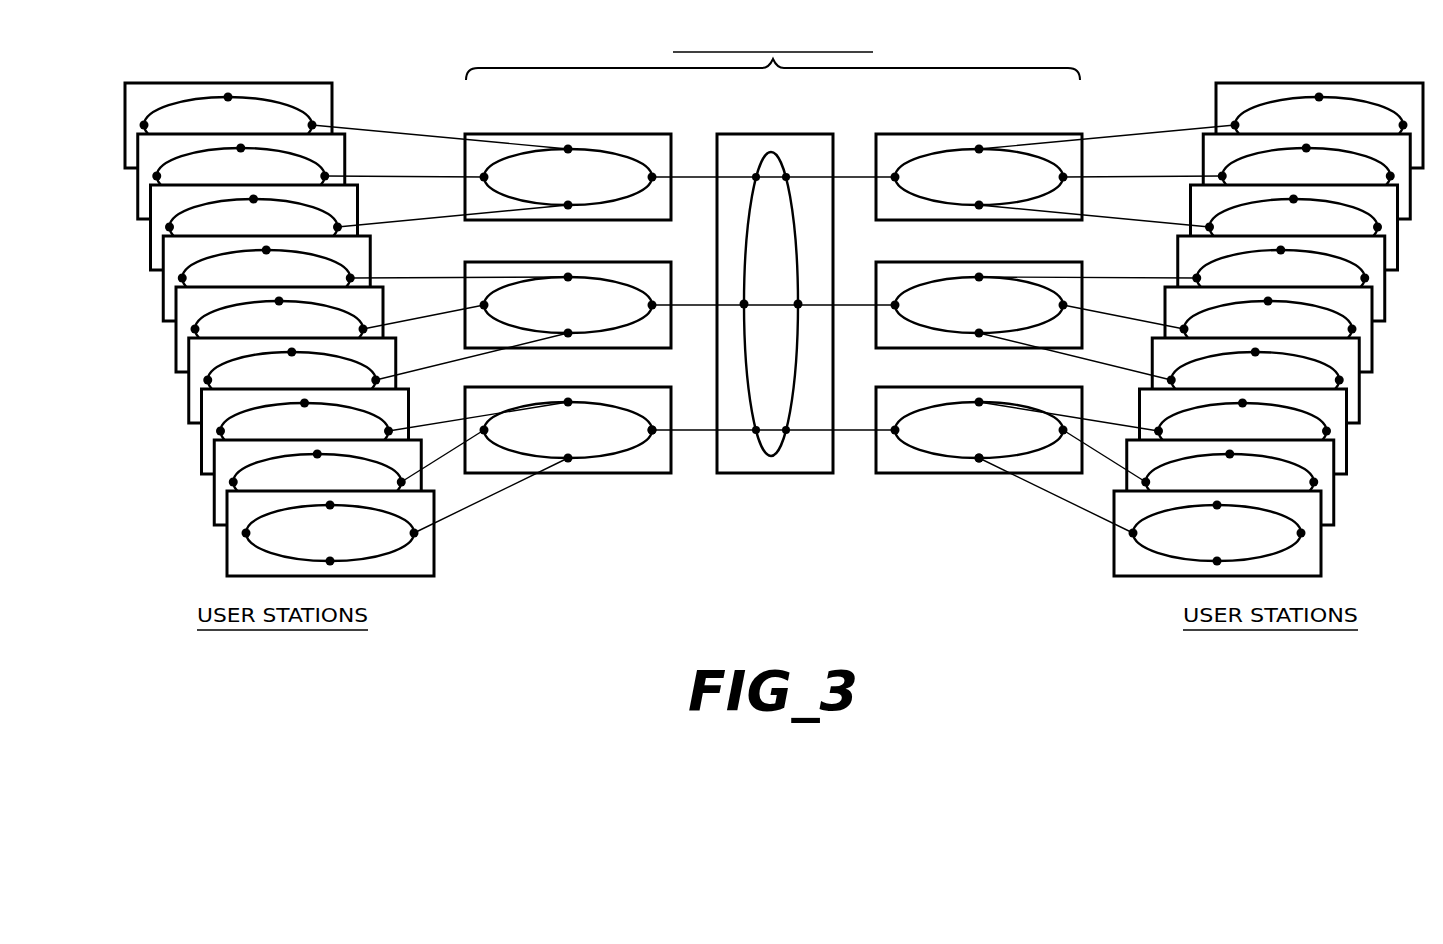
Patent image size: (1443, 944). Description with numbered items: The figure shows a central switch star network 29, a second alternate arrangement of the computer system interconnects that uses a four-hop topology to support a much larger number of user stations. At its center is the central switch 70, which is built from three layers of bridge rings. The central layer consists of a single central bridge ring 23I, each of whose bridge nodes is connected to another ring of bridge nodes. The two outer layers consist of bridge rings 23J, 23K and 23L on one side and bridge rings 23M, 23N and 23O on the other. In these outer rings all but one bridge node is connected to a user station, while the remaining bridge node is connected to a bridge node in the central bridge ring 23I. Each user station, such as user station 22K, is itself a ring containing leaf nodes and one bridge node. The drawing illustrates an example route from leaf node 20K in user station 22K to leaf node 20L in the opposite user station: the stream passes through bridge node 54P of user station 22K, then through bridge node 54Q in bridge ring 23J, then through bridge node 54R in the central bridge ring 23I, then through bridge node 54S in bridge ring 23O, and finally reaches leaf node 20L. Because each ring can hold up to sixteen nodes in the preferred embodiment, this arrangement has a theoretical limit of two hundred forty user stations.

The central switch 70 is at (918, 68).
The central switch star network 29 is at (785, 628).
The bridge ring 23L is at (626, 134).
The bridge ring 23K is at (602, 262).
The bridge ring 23J is at (602, 388).
The central bridge ring 23I is at (732, 474).
The bridge ring 23M is at (917, 134).
The bridge ring 23N is at (948, 262).
The bridge ring 23O is at (948, 388).
The leaf node 20K is at (246, 533).
The leaf node 20L is at (1301, 534).
The user station 22K is at (774, 551).
The bridge node 54P is at (416, 535).
The bridge node 54Q is at (652, 432).
The bridge node 54R is at (786, 432).
The bridge node 54S is at (979, 460).